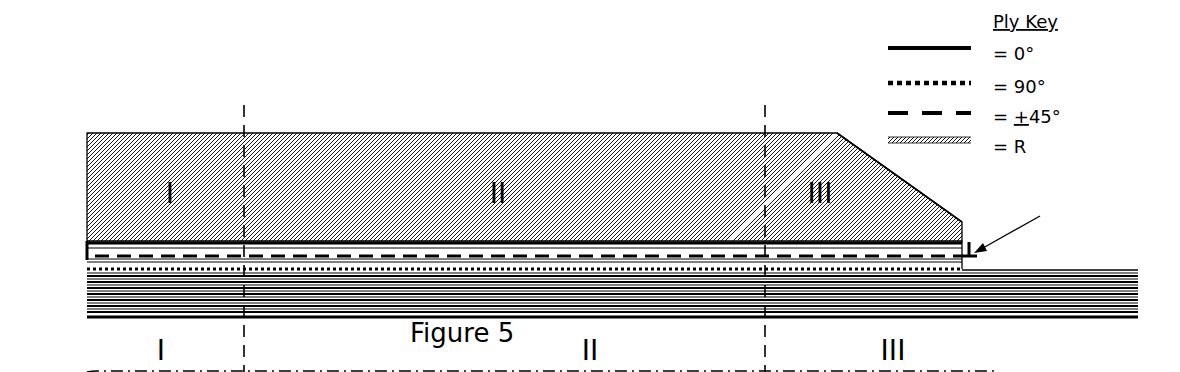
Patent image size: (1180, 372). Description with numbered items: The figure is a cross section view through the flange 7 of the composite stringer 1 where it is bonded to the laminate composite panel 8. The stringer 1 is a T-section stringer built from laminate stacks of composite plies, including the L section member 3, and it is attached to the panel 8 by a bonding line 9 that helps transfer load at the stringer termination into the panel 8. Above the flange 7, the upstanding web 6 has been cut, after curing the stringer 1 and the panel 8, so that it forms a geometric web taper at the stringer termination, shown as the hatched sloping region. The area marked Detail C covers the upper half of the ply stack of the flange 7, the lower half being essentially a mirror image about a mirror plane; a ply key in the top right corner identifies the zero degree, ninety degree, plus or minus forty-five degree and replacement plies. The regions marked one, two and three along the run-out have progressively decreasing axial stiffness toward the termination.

The composite stringer 1 is at (628, 104).
The L section member 3 is at (655, 177).
The upstanding web 6 is at (868, 196).
The flange 7 is at (124, 252).
The laminate composite panel 8 is at (1073, 289).
The bonding line 9 is at (965, 268).